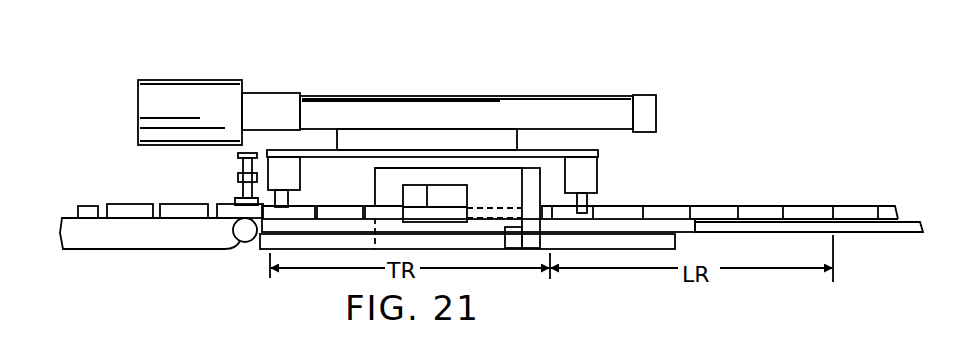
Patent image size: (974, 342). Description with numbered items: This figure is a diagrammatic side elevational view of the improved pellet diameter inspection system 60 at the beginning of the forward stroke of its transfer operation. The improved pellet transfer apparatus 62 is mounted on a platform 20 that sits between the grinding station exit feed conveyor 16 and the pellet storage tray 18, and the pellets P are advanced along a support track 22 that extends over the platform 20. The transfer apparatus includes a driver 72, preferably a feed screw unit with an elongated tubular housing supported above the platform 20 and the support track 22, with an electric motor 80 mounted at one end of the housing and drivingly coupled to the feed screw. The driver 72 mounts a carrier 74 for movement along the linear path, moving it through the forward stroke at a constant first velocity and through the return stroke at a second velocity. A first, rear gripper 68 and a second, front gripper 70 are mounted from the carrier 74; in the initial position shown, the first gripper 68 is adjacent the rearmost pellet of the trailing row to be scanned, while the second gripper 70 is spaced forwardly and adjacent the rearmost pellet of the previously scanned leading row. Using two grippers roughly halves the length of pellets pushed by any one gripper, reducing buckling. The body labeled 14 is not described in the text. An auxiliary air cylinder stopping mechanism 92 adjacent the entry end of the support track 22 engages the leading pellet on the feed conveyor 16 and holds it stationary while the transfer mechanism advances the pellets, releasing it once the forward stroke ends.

The carriage 14 is at (428, 147).
The grinding station exit feed conveyor 16 is at (140, 243).
The pellet storage tray 18 is at (903, 233).
The platform 20 is at (643, 243).
The support track 22 is at (668, 228).
The pellet diameter inspection system 60 is at (421, 90).
The pellet transfer apparatus 62 is at (594, 90).
The first gripper 68 is at (300, 176).
The second gripper 70 is at (598, 172).
The driver 72 is at (310, 92).
The carrier 74 is at (523, 147).
The electric motor 80 is at (170, 80).
The auxiliary air cylinder stopping mechanism 92 is at (238, 172).
The pellets P is at (177, 202).